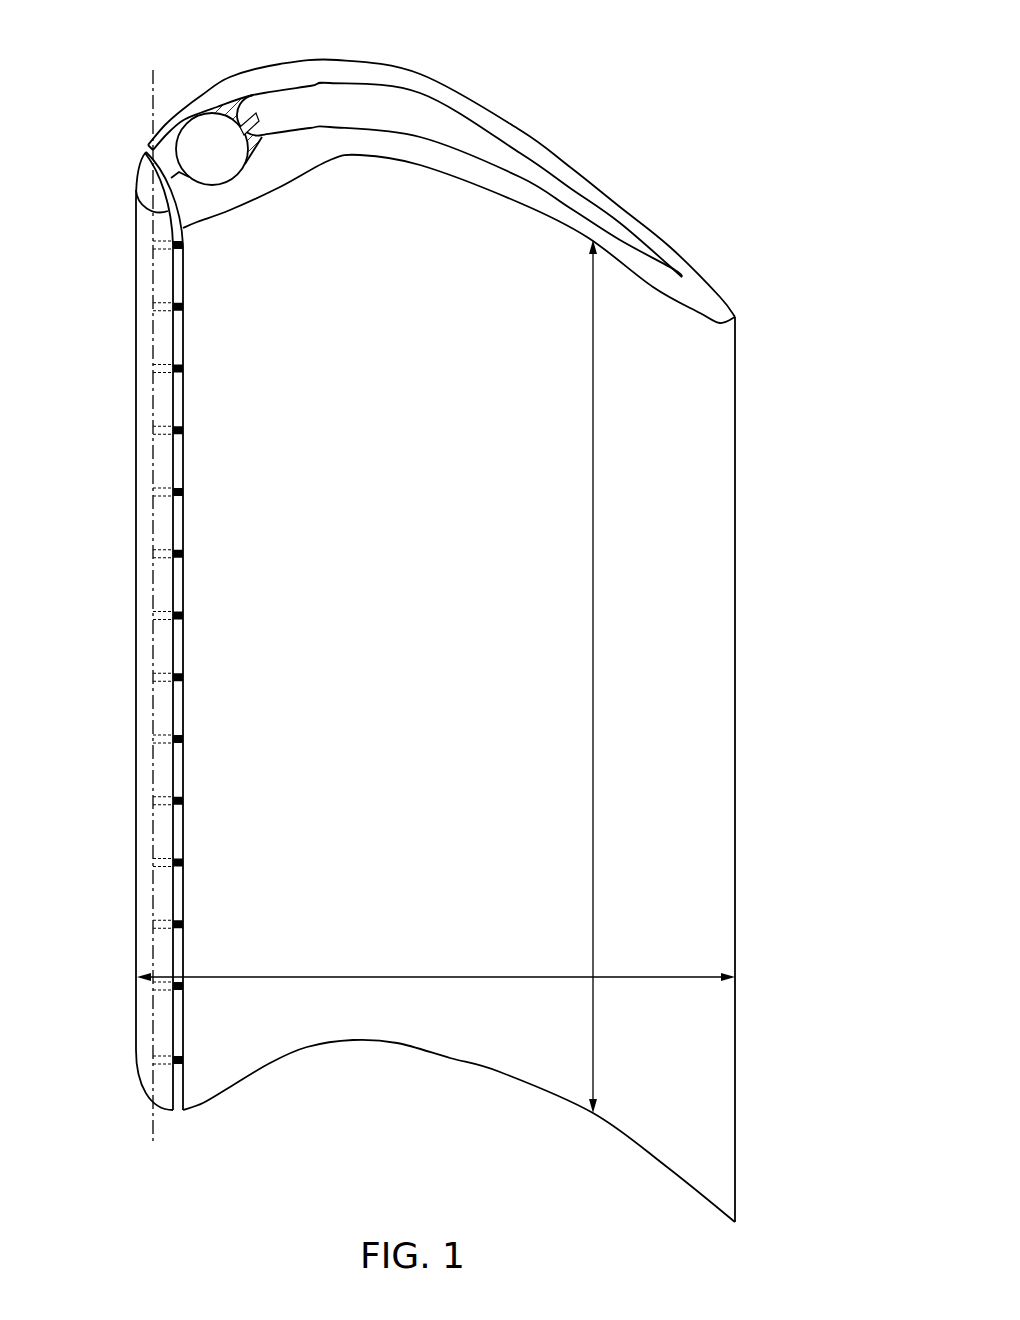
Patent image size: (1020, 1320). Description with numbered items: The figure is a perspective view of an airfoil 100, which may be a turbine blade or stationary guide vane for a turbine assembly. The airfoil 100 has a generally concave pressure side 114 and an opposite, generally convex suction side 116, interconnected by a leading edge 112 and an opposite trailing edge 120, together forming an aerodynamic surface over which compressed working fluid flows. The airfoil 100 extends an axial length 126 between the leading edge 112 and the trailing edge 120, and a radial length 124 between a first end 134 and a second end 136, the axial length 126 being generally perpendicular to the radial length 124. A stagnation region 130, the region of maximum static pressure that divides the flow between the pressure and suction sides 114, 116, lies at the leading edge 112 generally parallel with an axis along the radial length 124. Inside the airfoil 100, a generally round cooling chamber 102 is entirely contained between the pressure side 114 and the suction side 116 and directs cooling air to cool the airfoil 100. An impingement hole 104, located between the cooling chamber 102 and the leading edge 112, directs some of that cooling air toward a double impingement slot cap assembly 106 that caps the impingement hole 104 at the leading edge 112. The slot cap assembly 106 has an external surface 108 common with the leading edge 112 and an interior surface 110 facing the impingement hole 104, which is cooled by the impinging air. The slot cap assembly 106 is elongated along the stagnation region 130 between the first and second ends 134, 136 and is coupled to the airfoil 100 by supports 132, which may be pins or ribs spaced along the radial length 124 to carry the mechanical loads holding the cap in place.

The airfoil 100 is at (639, 58).
The cooling chamber 102 is at (212, 149).
The impingement hole 104 is at (173, 160).
The double impingement slot cap assembly 106 is at (146, 152).
The external surface 108 is at (145, 188).
The interior surface 110 is at (136, 210).
The leading edge 112 is at (139, 168).
The pressure side 114 is at (549, 468).
The suction side 116 is at (428, 76).
The trailing edge 120 is at (736, 711).
The radial length 124 is at (594, 676).
The axial length 126 is at (437, 976).
The stagnation region 130 is at (152, 88).
The supports 132 is at (155, 245).
The first end 134 is at (337, 60).
The second end 136 is at (369, 1041).